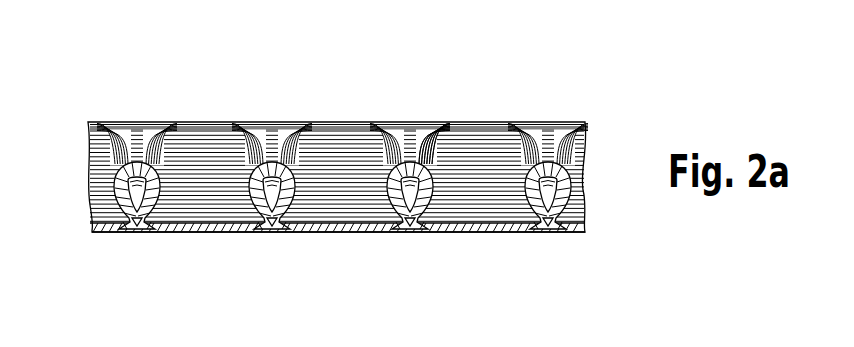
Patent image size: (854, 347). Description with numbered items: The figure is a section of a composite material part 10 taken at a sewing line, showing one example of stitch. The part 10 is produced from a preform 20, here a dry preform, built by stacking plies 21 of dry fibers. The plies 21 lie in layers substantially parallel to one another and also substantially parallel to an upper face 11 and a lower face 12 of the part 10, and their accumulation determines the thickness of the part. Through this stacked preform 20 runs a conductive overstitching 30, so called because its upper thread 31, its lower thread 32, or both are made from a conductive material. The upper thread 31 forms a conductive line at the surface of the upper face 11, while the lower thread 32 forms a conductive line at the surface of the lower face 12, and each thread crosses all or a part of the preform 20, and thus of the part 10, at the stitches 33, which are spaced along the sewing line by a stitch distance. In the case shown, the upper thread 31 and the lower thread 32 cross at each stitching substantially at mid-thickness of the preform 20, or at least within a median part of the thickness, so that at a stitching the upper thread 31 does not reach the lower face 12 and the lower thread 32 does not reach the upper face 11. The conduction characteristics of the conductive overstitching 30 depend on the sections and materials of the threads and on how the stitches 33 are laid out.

The part 10 is at (146, 266).
The upper face 11 is at (545, 121).
The lower face 12 is at (342, 178).
The preform 20 is at (188, 141).
The plies 21 is at (340, 141).
The conductive overstitching 30 is at (70, 121).
The upper thread 31 is at (433, 143).
The lower thread 32 is at (466, 226).
The stitches 33 is at (404, 105).